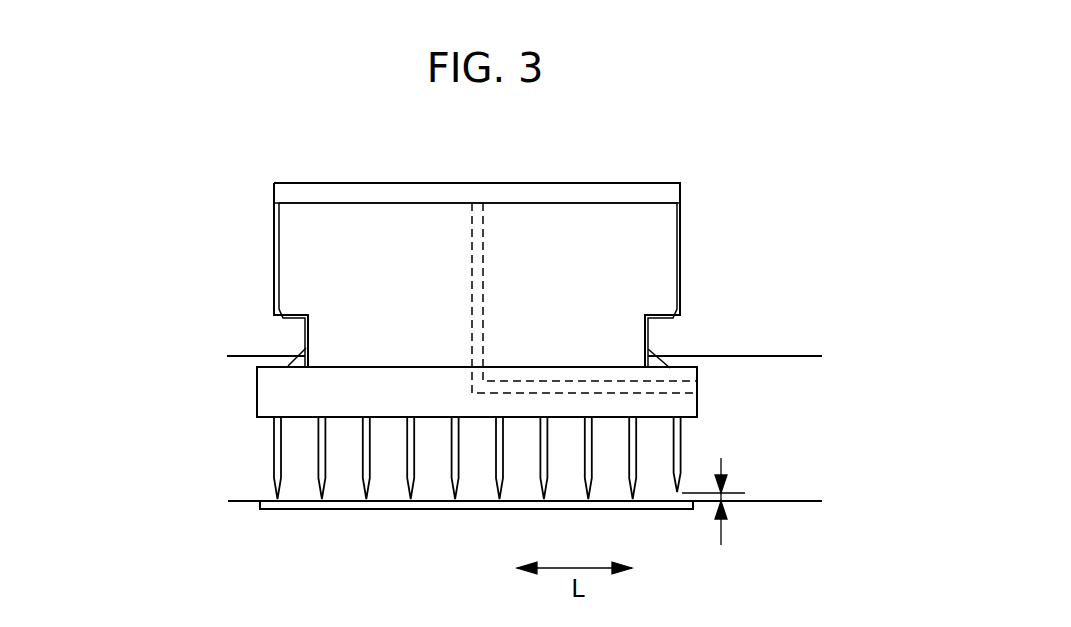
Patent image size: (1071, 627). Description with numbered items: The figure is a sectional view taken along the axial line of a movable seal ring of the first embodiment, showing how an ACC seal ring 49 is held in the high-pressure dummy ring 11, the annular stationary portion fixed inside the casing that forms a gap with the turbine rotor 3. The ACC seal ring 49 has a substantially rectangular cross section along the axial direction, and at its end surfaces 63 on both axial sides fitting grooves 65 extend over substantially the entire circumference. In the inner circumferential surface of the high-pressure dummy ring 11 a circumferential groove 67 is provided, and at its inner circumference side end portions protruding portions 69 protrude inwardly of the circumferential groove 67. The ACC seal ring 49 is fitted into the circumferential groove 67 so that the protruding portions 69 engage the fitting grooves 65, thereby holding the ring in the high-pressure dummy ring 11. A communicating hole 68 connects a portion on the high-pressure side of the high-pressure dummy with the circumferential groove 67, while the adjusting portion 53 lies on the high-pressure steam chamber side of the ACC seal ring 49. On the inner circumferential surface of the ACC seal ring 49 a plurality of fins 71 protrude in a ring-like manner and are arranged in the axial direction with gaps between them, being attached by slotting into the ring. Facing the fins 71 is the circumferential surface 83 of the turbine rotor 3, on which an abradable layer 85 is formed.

The turbine rotor 3 is at (774, 569).
The high-pressure dummy ring 11 is at (771, 339).
The ACC seal ring 49 is at (190, 435).
The adjusting portion 53 is at (810, 424).
The end surface 63 is at (680, 236).
The fitting groove 65 is at (306, 348).
The circumferential groove 67 is at (527, 186).
The communicating hole 68 is at (483, 280).
The protruding portion 69 is at (291, 333).
The fin 71 is at (275, 462).
The circumferential surface 83 is at (805, 501).
The abradable layer 85 is at (342, 507).